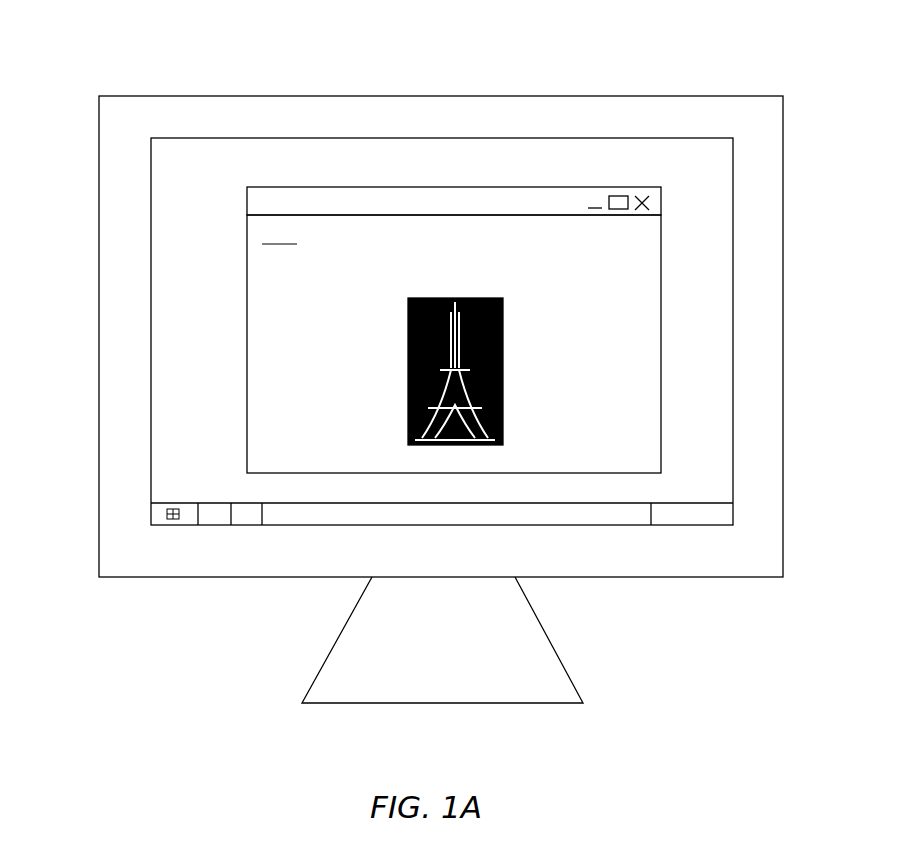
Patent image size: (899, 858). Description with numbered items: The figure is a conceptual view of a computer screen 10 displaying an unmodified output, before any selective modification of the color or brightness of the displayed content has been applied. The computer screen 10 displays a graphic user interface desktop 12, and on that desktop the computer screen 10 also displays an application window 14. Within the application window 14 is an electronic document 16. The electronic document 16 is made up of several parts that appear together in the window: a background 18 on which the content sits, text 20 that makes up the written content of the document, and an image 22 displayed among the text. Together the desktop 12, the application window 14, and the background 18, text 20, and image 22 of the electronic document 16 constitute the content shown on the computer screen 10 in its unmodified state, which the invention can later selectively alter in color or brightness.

The computer screen 10 is at (433, 96).
The graphic user interface (GUI) desktop 12 is at (212, 437).
The application window 14 is at (278, 187).
The electronic document 16 is at (245, 280).
The background 18 is at (592, 364).
The text 20 is at (634, 448).
The image 22 is at (408, 365).